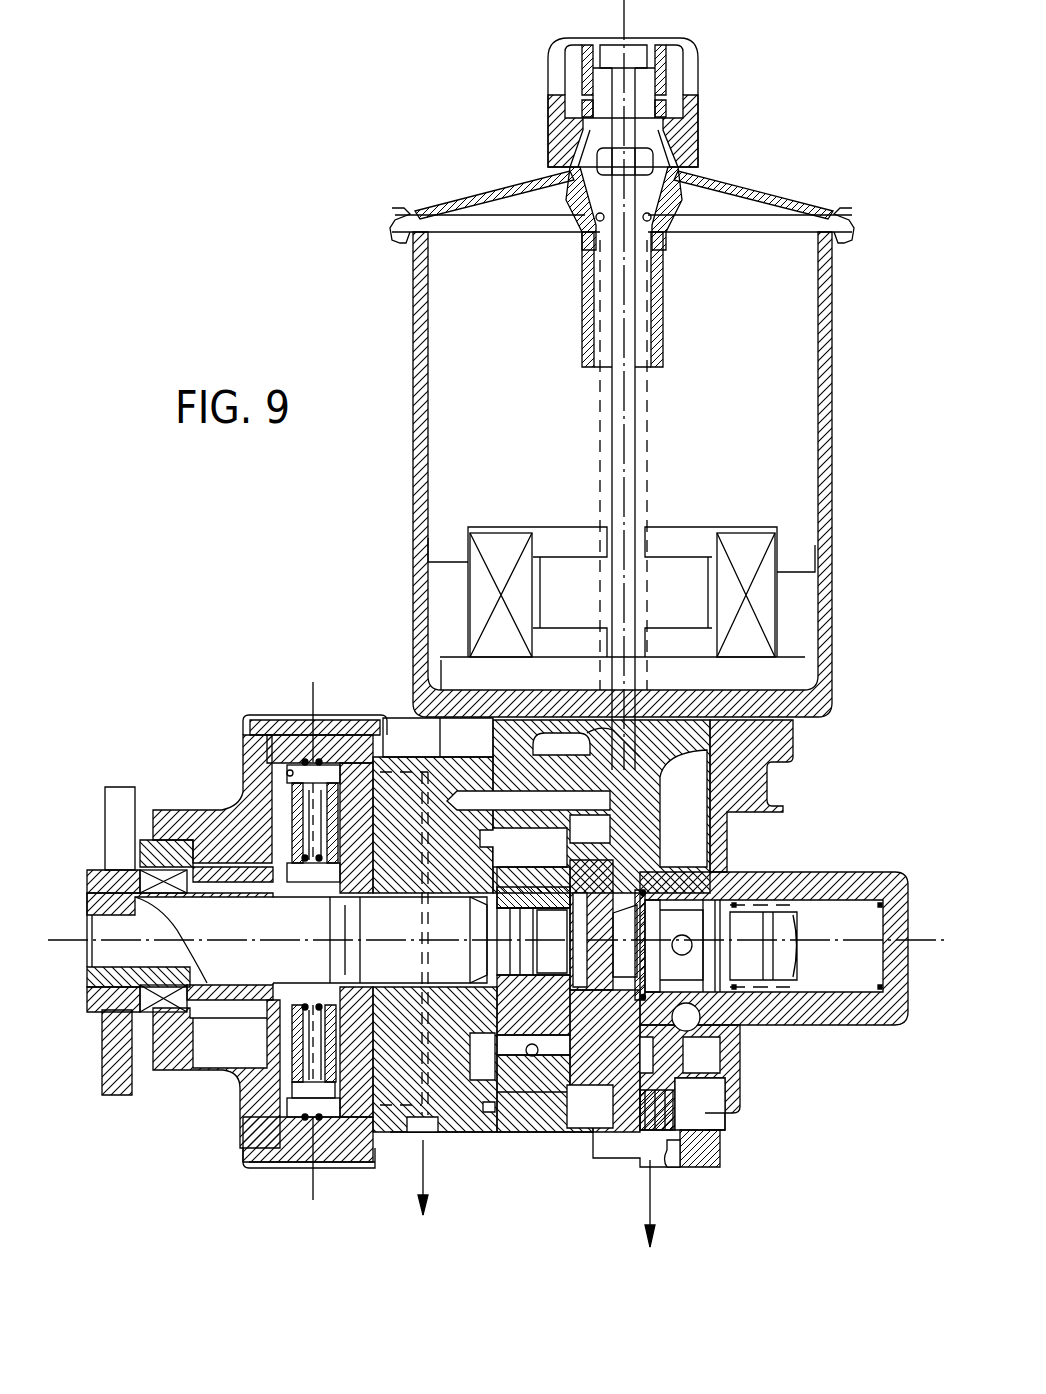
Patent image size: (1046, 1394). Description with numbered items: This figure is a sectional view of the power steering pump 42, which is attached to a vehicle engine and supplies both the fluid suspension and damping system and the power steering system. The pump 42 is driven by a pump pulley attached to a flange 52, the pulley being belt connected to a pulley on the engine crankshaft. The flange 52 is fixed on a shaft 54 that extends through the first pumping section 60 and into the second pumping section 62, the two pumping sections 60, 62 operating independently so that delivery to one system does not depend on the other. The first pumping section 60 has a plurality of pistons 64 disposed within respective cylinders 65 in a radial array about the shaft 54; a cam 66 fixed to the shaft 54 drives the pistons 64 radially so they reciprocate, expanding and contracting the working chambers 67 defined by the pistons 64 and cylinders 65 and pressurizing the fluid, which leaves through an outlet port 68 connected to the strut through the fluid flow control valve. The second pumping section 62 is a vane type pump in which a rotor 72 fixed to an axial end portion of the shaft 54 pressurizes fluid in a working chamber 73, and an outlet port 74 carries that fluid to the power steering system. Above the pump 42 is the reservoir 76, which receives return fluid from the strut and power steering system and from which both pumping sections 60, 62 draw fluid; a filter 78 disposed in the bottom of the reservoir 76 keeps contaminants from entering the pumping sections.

The pump 42 is at (323, 628).
The flange 52 is at (115, 837).
The shaft 54 is at (233, 957).
The first pumping section 60 is at (373, 1180).
The second pumping section 62 is at (612, 1178).
The pistons 64 is at (322, 805).
The cylinders 65 is at (278, 778).
The cam 66 is at (278, 810).
The working chambers 67 is at (245, 740).
The outlet port 68 is at (432, 1127).
The rotor 72 is at (556, 1035).
The working chamber 73 is at (553, 1033).
The outlet port 74 is at (667, 1160).
The reservoir 76 is at (835, 490).
The filter 78 is at (760, 597).